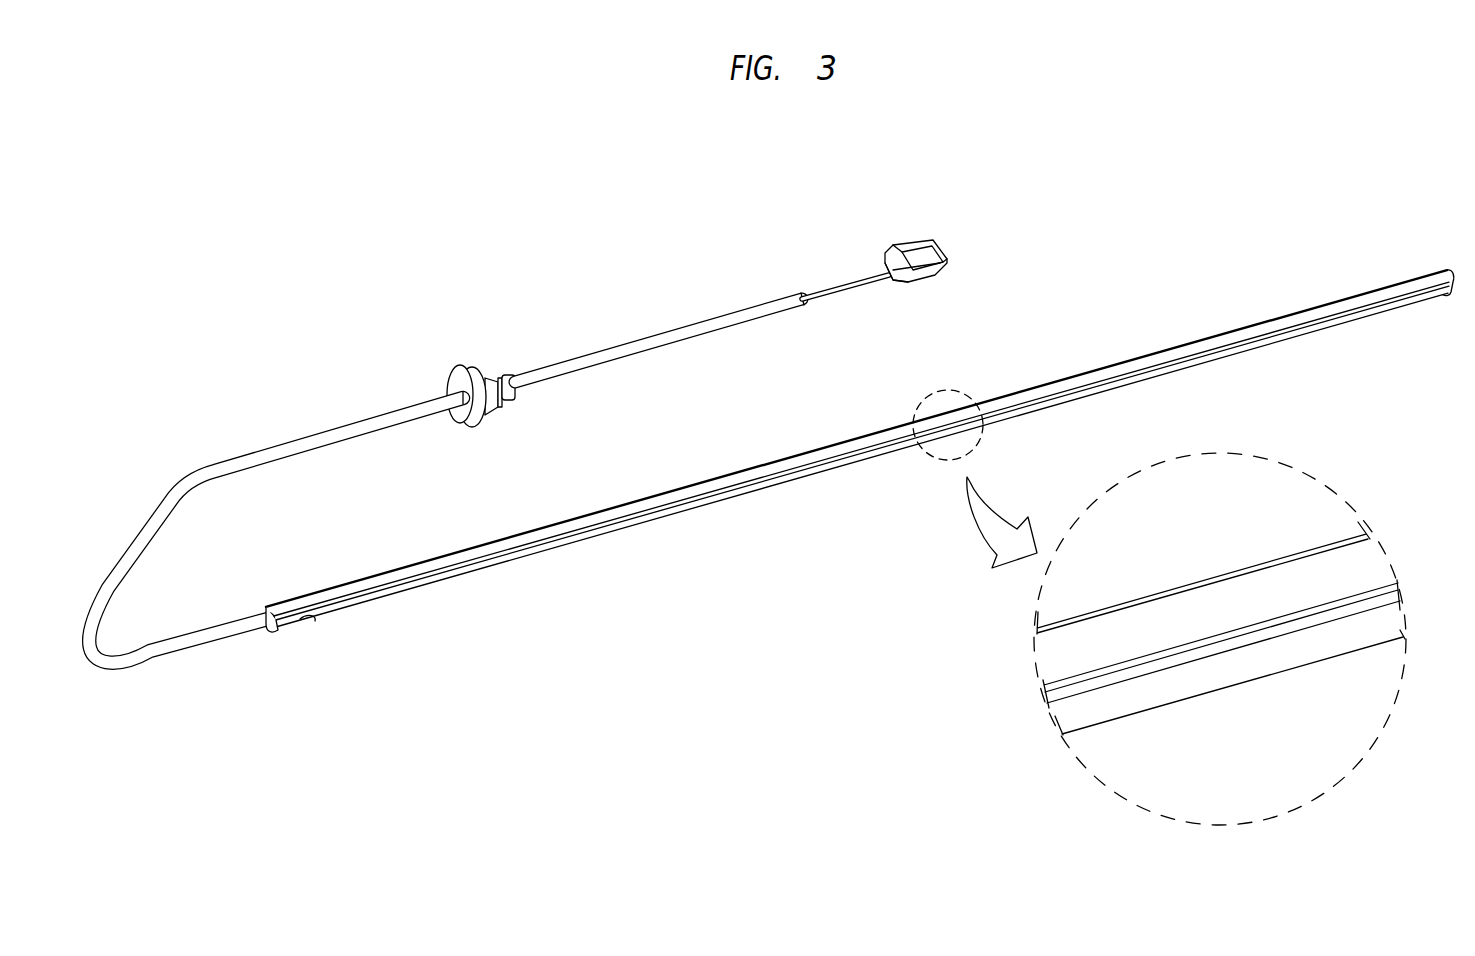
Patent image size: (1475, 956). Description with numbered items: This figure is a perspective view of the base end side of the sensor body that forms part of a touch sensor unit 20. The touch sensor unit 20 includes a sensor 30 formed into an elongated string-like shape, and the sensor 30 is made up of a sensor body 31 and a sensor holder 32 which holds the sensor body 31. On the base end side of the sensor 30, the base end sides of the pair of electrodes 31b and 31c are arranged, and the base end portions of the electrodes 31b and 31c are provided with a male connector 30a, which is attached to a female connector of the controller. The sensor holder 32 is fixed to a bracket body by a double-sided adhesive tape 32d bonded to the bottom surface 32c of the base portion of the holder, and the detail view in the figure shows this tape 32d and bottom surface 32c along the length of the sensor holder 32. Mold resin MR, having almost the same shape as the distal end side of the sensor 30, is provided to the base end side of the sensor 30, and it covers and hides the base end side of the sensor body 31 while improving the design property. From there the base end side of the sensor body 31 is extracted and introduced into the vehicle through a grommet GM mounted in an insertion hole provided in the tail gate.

The touch sensor unit 20 is at (378, 208).
The sensor 30 is at (655, 305).
The male connector 30a is at (920, 243).
The sensor body 31 is at (259, 445).
The electrode 31b is at (823, 290).
The electrode 31c is at (862, 290).
The sensor holder 32 is at (600, 541).
The bottom surface 32c is at (1290, 632).
The double-sided adhesive tape 32d is at (1185, 348).
The grommet GM is at (465, 367).
The mold resin MR is at (288, 620).